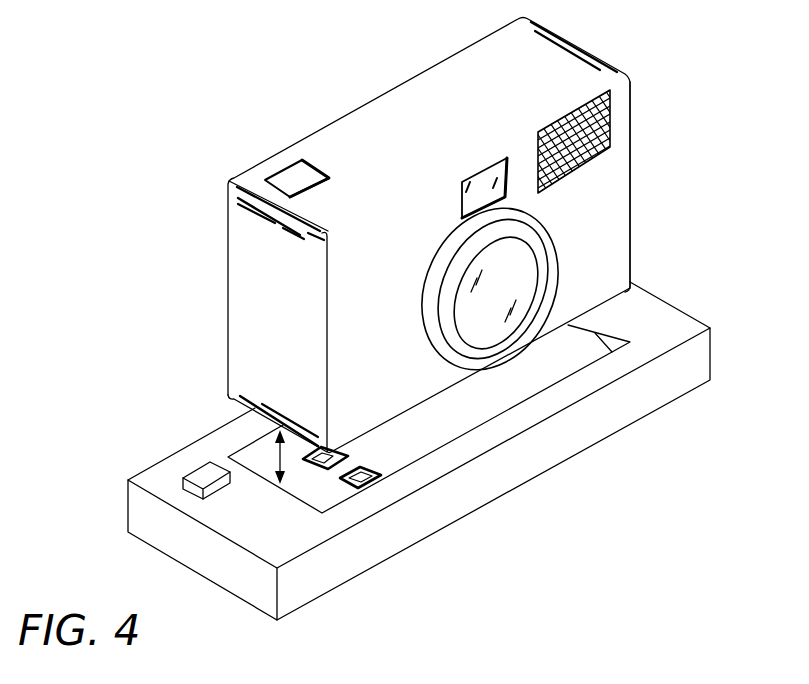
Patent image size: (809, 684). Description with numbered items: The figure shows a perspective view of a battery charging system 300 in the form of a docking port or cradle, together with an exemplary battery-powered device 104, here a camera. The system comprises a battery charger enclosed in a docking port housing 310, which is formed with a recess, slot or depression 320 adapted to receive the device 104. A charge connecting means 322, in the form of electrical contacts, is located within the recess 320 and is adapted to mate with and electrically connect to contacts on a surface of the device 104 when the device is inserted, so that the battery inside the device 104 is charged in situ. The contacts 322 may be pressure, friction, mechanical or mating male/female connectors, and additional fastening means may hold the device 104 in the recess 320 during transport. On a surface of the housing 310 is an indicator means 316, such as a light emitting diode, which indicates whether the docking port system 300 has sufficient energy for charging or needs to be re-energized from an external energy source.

The device 104 is at (470, 54).
The battery charging system 300 is at (549, 498).
The docking port housing 310 is at (657, 316).
The indicator means 316 is at (200, 472).
The recess 320 is at (584, 338).
The charge connecting means 322 is at (305, 468).